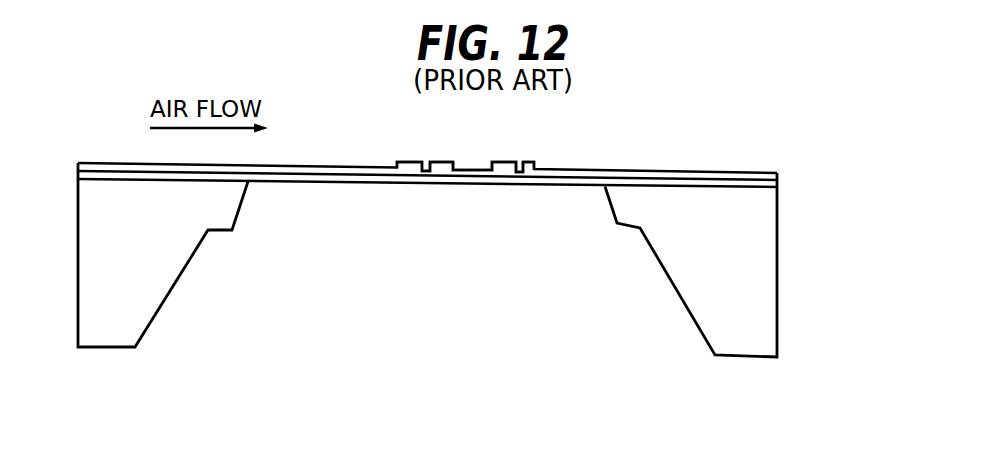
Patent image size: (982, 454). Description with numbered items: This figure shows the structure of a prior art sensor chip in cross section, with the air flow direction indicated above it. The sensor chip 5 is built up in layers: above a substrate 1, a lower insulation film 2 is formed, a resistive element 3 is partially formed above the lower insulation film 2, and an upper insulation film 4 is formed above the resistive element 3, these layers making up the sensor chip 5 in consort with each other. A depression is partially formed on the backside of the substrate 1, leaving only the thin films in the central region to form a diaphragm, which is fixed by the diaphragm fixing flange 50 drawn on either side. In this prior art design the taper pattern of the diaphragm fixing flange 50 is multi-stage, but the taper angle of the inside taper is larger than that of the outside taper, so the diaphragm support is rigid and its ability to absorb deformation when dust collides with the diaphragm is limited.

The substrate 1 is at (760, 287).
The lower insulation film 2 is at (605, 193).
The resistive element 3 is at (515, 160).
The upper insulation film 4 is at (560, 170).
The sensor chip 5 is at (800, 181).
The diaphragm fixing flange 50 is at (103, 364).